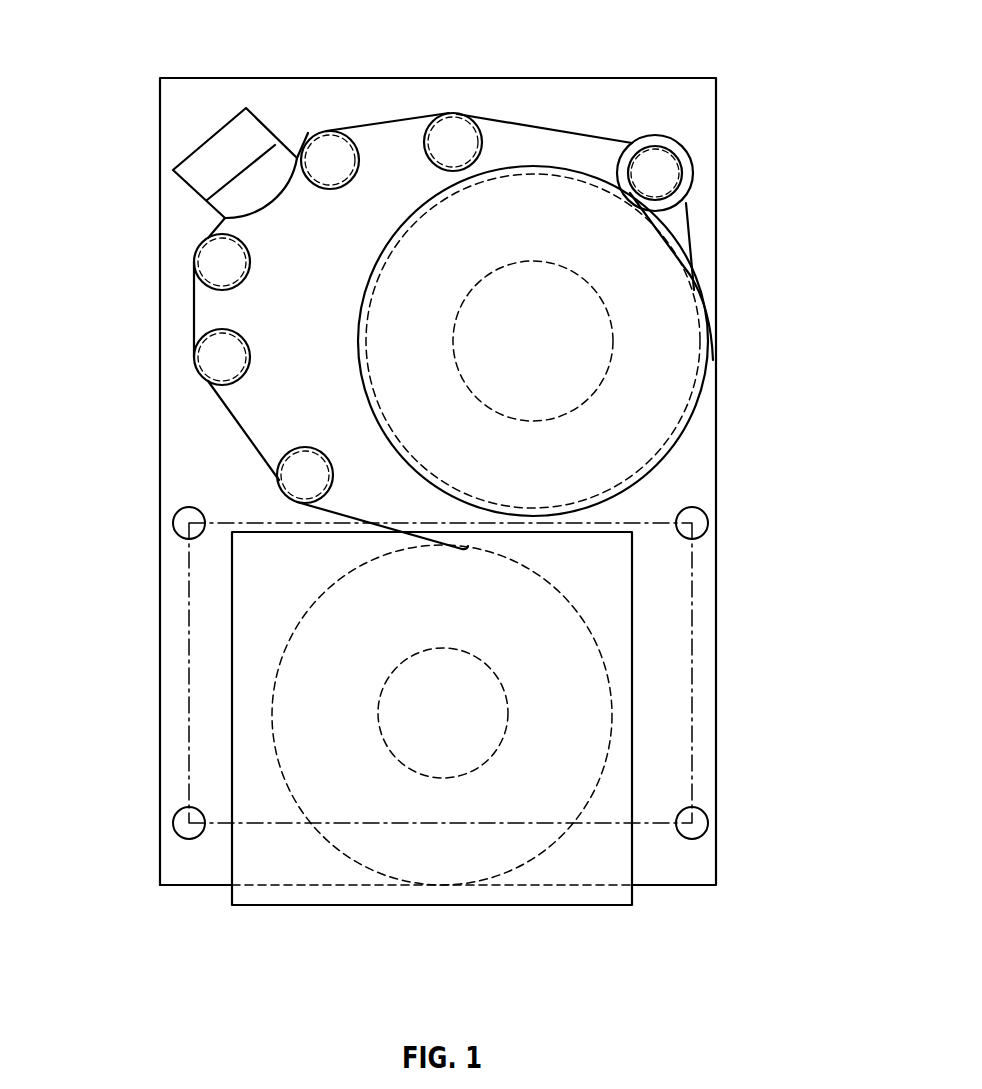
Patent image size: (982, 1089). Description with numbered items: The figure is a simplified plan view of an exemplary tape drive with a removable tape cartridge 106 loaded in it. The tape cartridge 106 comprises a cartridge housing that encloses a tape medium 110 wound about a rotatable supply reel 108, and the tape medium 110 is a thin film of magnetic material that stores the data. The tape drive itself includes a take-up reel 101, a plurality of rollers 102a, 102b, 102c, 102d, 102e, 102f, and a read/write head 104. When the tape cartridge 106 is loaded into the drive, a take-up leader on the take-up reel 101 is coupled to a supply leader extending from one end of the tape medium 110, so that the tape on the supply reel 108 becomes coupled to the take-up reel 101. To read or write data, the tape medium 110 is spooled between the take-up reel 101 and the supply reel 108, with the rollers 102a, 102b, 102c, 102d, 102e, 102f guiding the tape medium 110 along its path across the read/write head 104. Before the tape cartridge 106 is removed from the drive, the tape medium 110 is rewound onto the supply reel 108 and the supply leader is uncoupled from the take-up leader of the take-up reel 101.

The take-up reel 101 is at (682, 352).
The roller 102a is at (294, 483).
The roller 102b is at (208, 353).
The roller 102c is at (208, 268).
The roller 102d is at (314, 140).
The roller 102e is at (328, 140).
The roller 102f is at (655, 170).
The read/write head 104 is at (190, 166).
The tape cartridge 106 is at (633, 755).
The supply reel 108 is at (277, 670).
The tape medium 110 is at (243, 431).